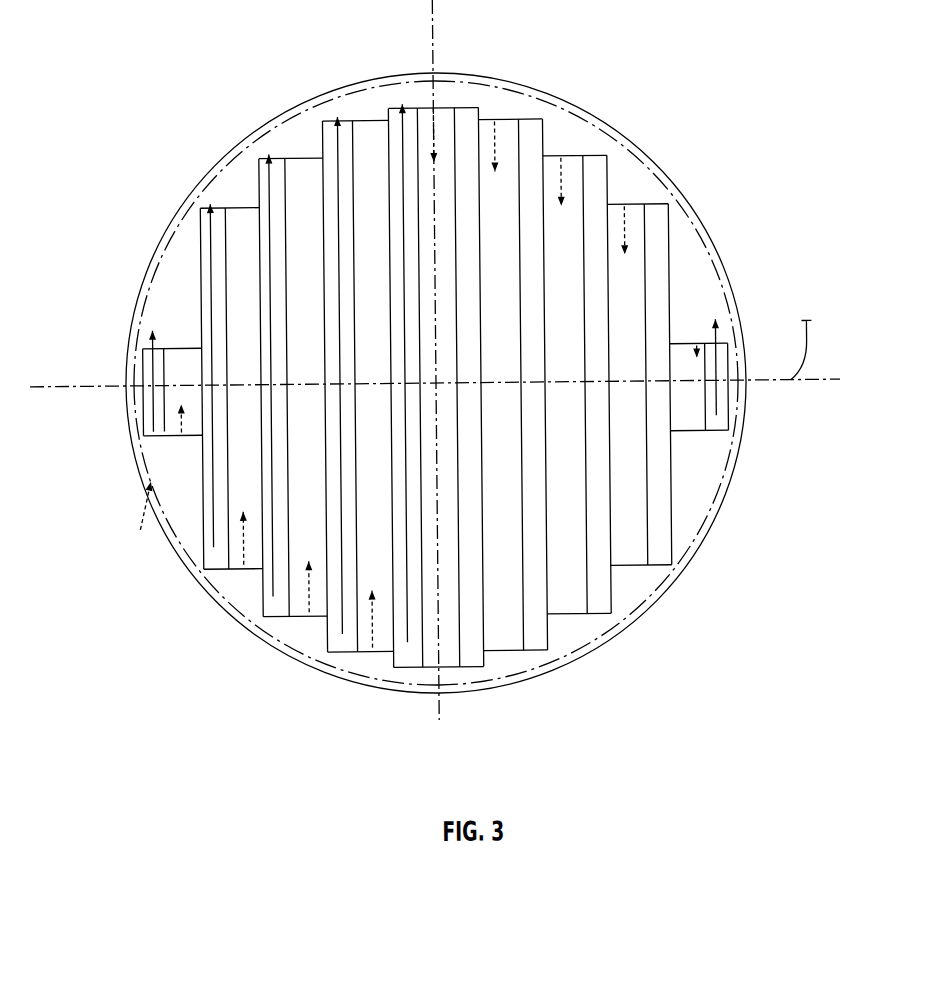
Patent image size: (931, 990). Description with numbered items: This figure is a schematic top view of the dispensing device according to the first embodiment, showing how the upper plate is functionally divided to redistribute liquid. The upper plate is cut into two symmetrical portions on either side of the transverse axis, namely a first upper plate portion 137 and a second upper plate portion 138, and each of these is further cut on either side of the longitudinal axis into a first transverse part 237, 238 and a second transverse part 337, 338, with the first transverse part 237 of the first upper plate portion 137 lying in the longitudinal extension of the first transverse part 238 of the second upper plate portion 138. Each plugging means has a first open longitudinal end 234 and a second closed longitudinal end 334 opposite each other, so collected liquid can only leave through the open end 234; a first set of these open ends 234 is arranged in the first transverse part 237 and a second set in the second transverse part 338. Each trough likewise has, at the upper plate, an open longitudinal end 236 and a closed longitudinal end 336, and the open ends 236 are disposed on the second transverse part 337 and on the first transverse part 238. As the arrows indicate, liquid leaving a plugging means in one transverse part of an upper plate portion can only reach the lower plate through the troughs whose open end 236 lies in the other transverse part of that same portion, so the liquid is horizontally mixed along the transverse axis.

The first upper plate portion 137 is at (410, 107).
The second upper plate portion 138 is at (141, 487).
The first open longitudinal end 234 is at (326, 119).
The open longitudinal end 236 is at (437, 100).
The first transverse part 237 is at (188, 66).
The first transverse part 238 is at (124, 609).
The second closed longitudinal end 334 is at (475, 110).
The closed longitudinal end 336 is at (373, 119).
The second transverse part 337 is at (708, 112).
The second transverse part 338 is at (743, 631).